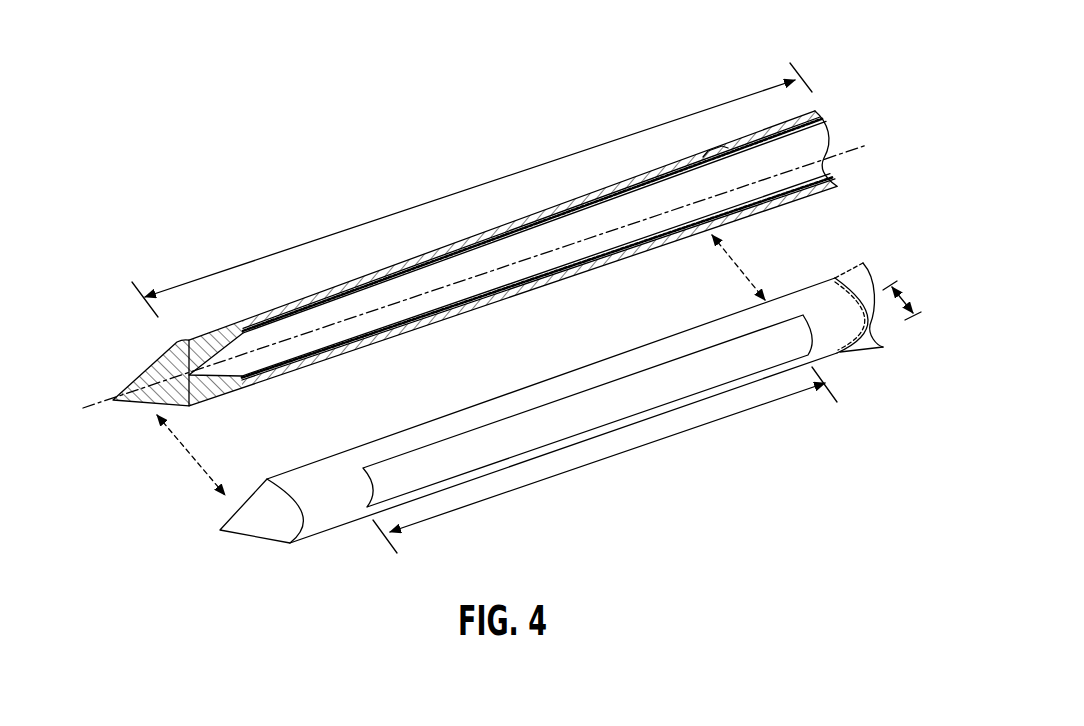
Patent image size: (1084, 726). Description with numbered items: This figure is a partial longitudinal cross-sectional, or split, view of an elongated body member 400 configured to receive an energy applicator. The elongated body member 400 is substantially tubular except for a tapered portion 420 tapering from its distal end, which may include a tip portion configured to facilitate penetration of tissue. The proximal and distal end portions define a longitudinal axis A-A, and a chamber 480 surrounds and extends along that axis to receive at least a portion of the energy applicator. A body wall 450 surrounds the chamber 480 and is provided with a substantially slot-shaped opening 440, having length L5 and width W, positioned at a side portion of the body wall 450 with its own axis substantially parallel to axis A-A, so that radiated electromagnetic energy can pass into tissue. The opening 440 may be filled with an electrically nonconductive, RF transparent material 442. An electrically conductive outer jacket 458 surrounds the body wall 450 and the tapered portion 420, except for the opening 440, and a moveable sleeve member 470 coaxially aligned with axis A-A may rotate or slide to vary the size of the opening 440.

The elongated body member 400 is at (258, 204).
The tapered portion 420 is at (146, 365).
The opening 440 is at (610, 419).
The electrically nonconductive material 442 is at (783, 346).
The body wall 450 is at (214, 392).
The outer jacket 458 is at (451, 320).
The sleeve member 470 is at (810, 198).
The chamber 480 is at (594, 247).